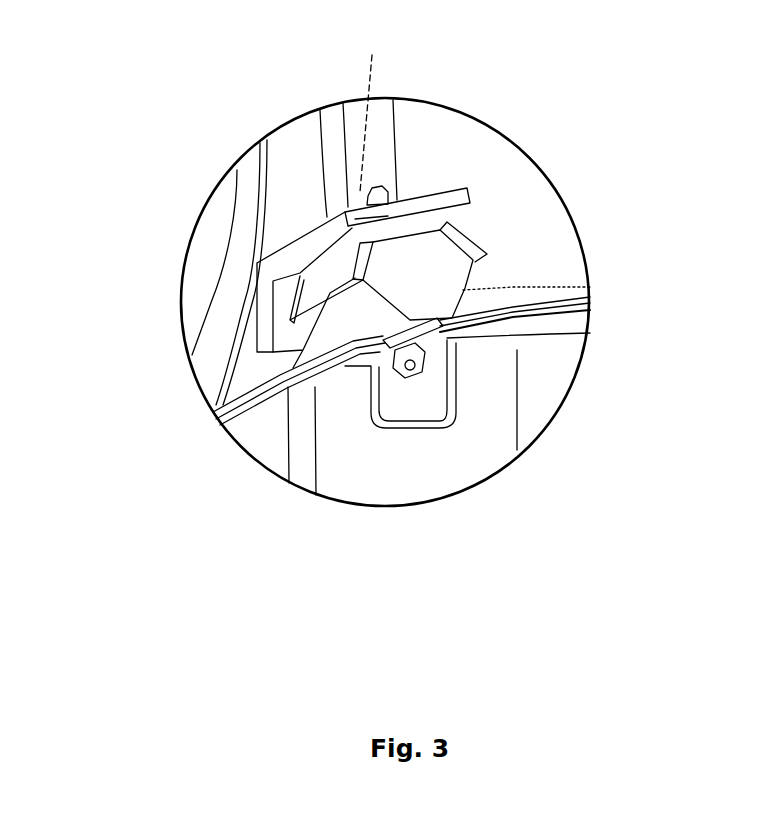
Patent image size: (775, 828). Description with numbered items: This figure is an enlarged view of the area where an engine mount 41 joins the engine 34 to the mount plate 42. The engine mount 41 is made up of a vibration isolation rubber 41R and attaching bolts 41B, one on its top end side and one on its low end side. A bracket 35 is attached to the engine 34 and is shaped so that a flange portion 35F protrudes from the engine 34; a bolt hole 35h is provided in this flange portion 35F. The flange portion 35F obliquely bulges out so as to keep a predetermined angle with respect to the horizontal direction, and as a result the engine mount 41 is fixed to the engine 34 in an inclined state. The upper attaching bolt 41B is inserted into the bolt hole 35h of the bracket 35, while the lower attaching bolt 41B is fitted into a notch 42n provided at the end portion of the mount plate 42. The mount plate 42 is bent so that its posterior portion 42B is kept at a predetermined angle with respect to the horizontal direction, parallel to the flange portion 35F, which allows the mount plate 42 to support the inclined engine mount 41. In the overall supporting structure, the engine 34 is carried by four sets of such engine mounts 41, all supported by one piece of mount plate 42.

The engine 34 is at (424, 112).
The bracket 35 is at (246, 333).
The flange portion 35F is at (303, 228).
The bolt hole 35h is at (369, 110).
The engine mount 41 is at (484, 231).
The attaching bolt 41B is at (380, 185).
The vibration isolation rubber 41R is at (590, 287).
The mount plate 42 is at (475, 422).
The posterior portion 42B is at (540, 332).
The notch 42n is at (428, 356).